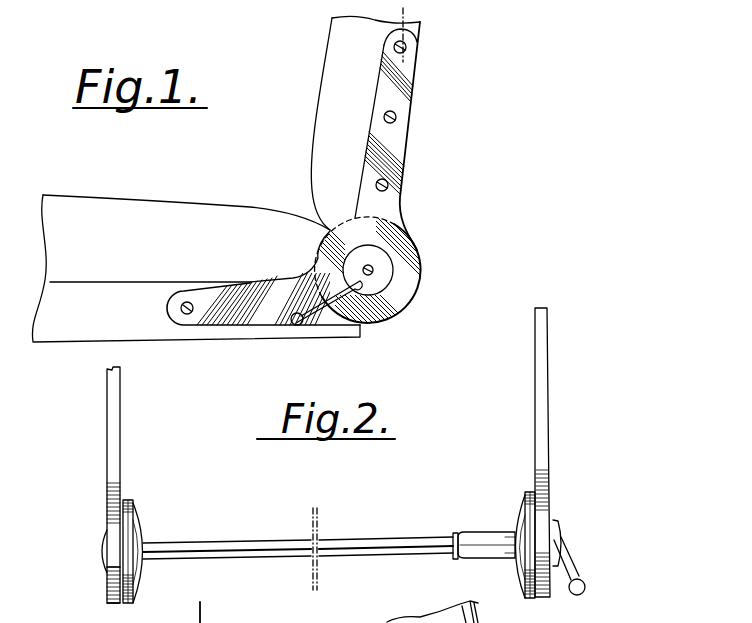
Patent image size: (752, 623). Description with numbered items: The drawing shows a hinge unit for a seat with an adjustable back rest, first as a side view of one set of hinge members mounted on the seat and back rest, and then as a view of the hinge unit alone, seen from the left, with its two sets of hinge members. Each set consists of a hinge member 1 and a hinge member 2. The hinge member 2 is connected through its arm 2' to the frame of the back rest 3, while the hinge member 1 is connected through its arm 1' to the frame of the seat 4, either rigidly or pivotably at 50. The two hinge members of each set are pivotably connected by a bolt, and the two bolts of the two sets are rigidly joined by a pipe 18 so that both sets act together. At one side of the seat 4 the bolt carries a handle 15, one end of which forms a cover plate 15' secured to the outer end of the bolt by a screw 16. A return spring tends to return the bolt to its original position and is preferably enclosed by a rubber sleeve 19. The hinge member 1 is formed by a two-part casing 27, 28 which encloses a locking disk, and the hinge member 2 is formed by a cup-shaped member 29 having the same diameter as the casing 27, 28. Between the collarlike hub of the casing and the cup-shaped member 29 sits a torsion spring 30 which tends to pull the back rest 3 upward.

In FIG. 2, the hinge member 1 is at (329, 532).
In FIG. 1, the arm 1' is at (263, 317).
In FIG. 2, the arm 1' is at (329, 584).
In FIG. 1, the hinge member 2 is at (400, 270).
In FIG. 2, the hinge member 2 is at (323, 519).
In FIG. 1, the arm 2' is at (408, 129).
In FIG. 2, the arm 2' is at (327, 455).
In FIG. 1, the back rest 3 is at (330, 88).
In FIG. 2, the back rest 3 is at (200, 614).
In FIG. 1, the seat 4 is at (131, 205).
In FIG. 1, the handle 15 is at (321, 329).
In FIG. 2, the handle 15 is at (579, 566).
In FIG. 1, the cover plate 15' is at (403, 276).
In FIG. 2, the cover plate 15' is at (580, 538).
In FIG. 1, the screw 16 is at (372, 271).
In FIG. 2, the pipe 18 is at (363, 545).
In FIG. 2, the rubber sleeve 19 is at (473, 543).
In FIG. 2, the casing part 27 is at (127, 523).
In FIG. 2, the casing part 28 is at (138, 535).
In FIG. 2, the cup-shaped member 29 is at (117, 587).
In FIG. 2, the torsion spring 30 is at (313, 612).
In FIG. 1, the pivot 50 is at (187, 318).